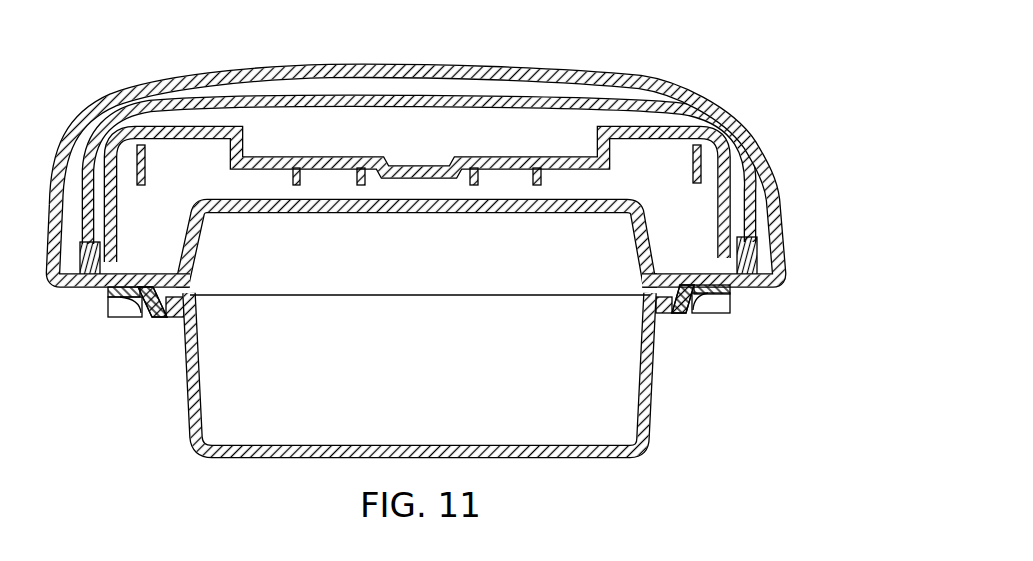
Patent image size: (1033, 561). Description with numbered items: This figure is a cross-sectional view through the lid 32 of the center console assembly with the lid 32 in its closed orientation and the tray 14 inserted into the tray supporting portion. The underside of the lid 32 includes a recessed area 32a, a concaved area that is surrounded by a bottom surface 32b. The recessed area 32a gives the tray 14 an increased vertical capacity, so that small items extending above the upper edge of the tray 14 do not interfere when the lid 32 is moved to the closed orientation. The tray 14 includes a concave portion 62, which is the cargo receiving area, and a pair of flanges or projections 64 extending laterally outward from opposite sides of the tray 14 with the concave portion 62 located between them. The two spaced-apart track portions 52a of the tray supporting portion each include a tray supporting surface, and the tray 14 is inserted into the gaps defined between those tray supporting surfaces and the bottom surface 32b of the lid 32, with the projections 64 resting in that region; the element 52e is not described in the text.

The lid 32 is at (416, 157).
The recessed area 32a is at (597, 247).
The bottom surface 32b is at (108, 311).
The track portions 52a is at (142, 300).
The seal hinge strip 52e is at (172, 283).
The projections 64 is at (170, 315).
The tray 14 is at (267, 465).
The concave portion 62 is at (402, 391).